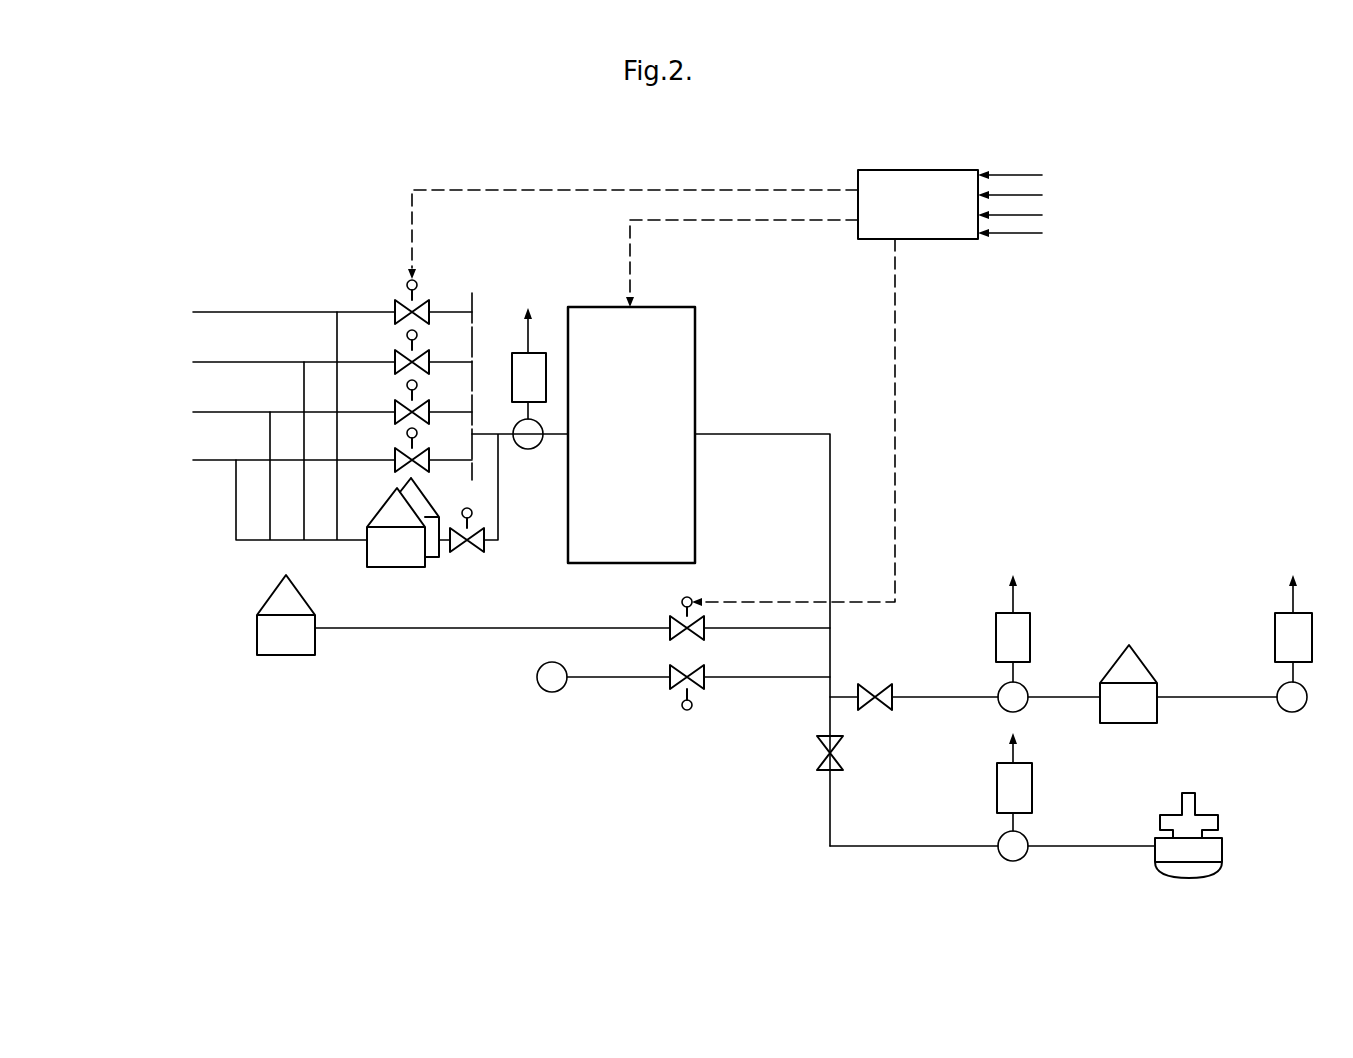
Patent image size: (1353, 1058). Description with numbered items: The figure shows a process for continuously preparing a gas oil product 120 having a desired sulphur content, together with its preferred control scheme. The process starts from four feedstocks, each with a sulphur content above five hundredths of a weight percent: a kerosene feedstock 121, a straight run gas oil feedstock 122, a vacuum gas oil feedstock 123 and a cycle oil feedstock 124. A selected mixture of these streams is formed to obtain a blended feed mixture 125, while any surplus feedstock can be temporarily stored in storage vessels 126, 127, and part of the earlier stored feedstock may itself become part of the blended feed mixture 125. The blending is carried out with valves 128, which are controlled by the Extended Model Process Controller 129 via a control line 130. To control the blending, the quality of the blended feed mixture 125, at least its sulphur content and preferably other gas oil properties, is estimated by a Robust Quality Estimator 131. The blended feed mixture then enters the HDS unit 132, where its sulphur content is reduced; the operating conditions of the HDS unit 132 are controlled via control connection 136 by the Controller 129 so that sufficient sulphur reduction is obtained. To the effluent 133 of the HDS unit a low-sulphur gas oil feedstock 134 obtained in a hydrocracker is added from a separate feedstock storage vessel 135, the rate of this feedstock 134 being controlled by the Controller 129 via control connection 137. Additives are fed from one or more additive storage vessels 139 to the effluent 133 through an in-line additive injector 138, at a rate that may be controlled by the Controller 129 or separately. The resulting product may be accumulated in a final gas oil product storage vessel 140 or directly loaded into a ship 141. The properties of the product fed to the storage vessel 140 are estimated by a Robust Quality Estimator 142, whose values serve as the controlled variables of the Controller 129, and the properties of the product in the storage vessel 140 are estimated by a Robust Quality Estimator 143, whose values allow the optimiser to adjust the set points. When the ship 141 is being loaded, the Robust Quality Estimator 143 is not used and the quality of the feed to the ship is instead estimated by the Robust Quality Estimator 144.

The gas oil product 120 is at (1070, 697).
The kerosene feedstock 121 is at (208, 313).
The straight run gas oil feedstock 122 is at (208, 363).
The vacuum gas oil feedstock 123 is at (208, 413).
The cycle oil feedstock 124 is at (208, 461).
The blended feed mixture 125 is at (545, 445).
The storage vessel 126 is at (390, 553).
The storage vessel 127 is at (437, 553).
The valves 128 is at (400, 305).
The Extended Model Process Controller 129 is at (928, 225).
The control line 130 is at (703, 190).
The Robust Quality Estimator 131 is at (520, 348).
The HDS unit 132 is at (697, 350).
The effluent 133 is at (808, 433).
The low-sulphur gas oil feedstock 134 is at (412, 630).
The feedstock storage vessel 135 is at (287, 640).
The control line 136 is at (748, 222).
The control line 137 is at (897, 443).
The in-line additive injector 138 is at (752, 678).
The additive storage vessel 139 is at (552, 692).
The final gas oil product storage vessel 140 is at (1118, 690).
The ship 141 is at (1185, 855).
The Robust Quality Estimator 142 is at (1010, 642).
The Robust Quality Estimator 143 is at (1285, 642).
The Robust Quality Estimator 144 is at (1005, 790).